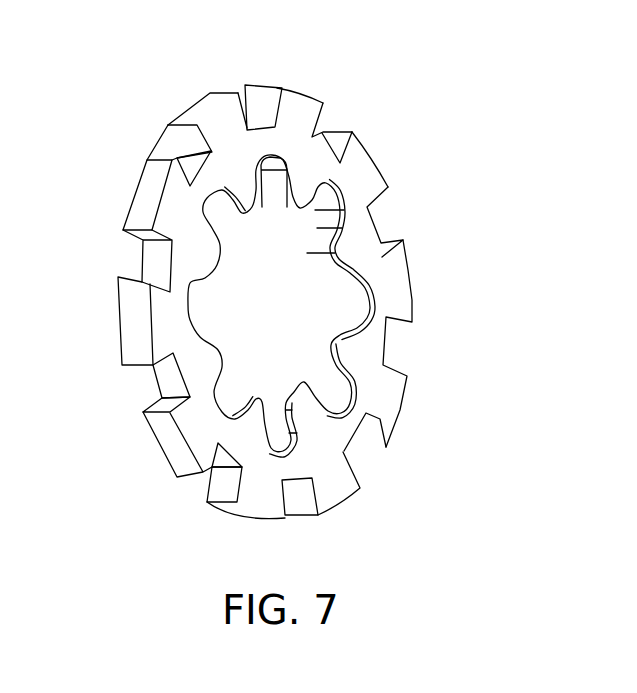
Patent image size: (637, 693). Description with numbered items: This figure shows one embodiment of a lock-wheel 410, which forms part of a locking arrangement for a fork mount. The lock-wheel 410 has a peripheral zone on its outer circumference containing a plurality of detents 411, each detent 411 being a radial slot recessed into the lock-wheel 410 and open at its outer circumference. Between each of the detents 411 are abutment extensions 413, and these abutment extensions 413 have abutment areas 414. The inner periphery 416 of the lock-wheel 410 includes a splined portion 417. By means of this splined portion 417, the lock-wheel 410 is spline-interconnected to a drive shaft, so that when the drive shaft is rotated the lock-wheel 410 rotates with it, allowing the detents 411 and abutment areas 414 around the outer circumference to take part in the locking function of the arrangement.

The lock-wheel 410 is at (268, 265).
The detents 411 is at (172, 160).
The abutment extensions 413 is at (418, 248).
The abutment areas 414 is at (360, 160).
The inner periphery 416 is at (263, 267).
The splined portion 417 is at (337, 397).